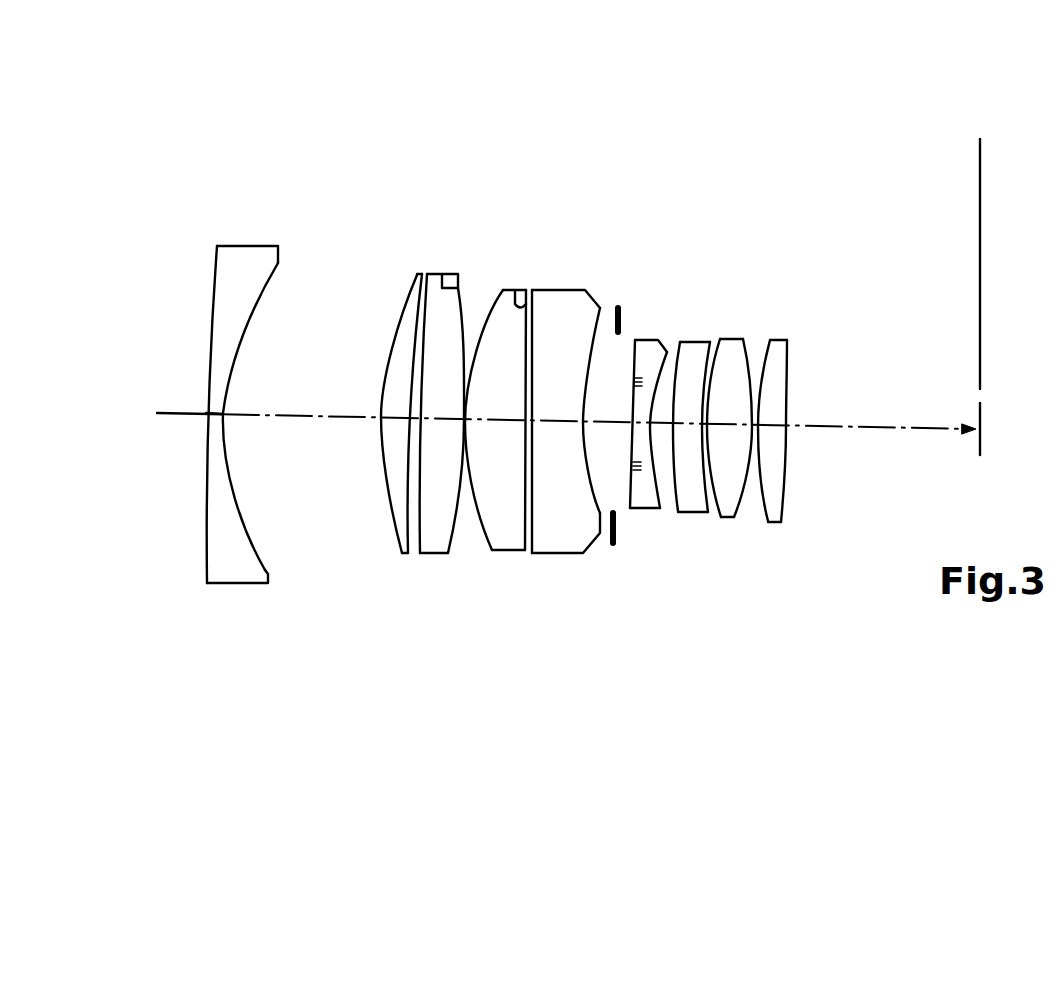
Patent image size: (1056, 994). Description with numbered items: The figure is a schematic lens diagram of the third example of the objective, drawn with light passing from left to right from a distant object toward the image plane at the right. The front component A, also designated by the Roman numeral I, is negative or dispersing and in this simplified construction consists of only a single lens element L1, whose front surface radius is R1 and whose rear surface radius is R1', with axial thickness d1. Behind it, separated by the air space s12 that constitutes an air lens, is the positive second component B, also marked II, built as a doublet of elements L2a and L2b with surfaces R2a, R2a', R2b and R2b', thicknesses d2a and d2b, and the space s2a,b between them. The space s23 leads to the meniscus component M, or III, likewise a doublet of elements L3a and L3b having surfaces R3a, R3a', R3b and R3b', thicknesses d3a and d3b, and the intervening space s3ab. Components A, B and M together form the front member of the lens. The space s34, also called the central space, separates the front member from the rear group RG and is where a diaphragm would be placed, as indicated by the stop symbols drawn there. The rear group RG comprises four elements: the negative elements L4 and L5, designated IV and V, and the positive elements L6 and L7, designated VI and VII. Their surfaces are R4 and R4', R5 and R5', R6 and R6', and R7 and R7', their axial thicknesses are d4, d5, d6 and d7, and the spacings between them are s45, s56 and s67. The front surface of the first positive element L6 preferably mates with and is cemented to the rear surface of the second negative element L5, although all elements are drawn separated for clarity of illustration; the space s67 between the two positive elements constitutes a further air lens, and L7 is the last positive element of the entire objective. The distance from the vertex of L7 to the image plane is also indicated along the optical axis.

The front component A is at (213, 290).
The second component B is at (382, 333).
The meniscus component M is at (475, 320).
The rear group RG is at (633, 333).
The first lens element L1 is at (221, 454).
The lens element L2a is at (386, 426).
The lens element L2b is at (432, 378).
The lens element L3a is at (506, 410).
The lens element L3b is at (569, 415).
The fourth lens element L4 is at (635, 458).
The fifth lens element L5 is at (687, 440).
The sixth lens element L6 is at (754, 428).
The seventh lens element L7 is at (806, 446).
The front surface radius of L1 R1 is at (186, 414).
The rear surface radius of L1 R1' is at (261, 416).
The front surface radius of L2a R2a is at (376, 399).
The rear surface radius of L2a R2a' is at (414, 372).
The front surface radius of L2b R2b is at (422, 348).
The rear surface radius of L2b R2b' is at (436, 323).
The front surface radius of L3a R3a is at (492, 383).
The rear surface radius of L3a R3a' is at (503, 353).
The front surface radius of L3b R3b is at (561, 389).
The rear surface radius of L3b R3b' is at (577, 340).
The front surface radius of L4 R4 is at (648, 374).
The rear surface radius of L4 R4' is at (660, 397).
The front surface radius of L5 R5 is at (680, 357).
The rear surface radius of L5 R5' is at (707, 381).
The front surface radius of L6 R6 is at (720, 346).
The rear surface radius of L6 R6' is at (742, 382).
The front surface radius of L7 R7 is at (764, 367).
The rear surface radius of L7 R7' is at (781, 385).
The axial thickness of L1 d1 is at (183, 388).
The axial thickness of L2a d2a is at (408, 418).
The axial thickness of L2b d2b is at (463, 421).
The axial thickness of L3a d3a is at (465, 422).
The axial thickness of L3b d3b is at (562, 429).
The axial thickness of L4 d4 is at (622, 401).
The axial thickness of L5 d5 is at (677, 404).
The axial thickness of L6 d6 is at (732, 433).
The axial thickness of L7 d7 is at (795, 427).
The space s12 is at (298, 420).
The space s2a,b is at (412, 440).
The space s23 is at (473, 525).
The space s3ab is at (538, 455).
The central space s34 is at (583, 427).
The space s45 is at (663, 517).
The space s56 is at (725, 515).
The space s67 is at (815, 452).
The first component I is at (228, 660).
The second component II is at (470, 657).
The third component III is at (605, 665).
The fourth element IV is at (633, 663).
The fifth element V is at (707, 665).
The sixth element VI is at (787, 670).
The seventh element VII is at (852, 670).